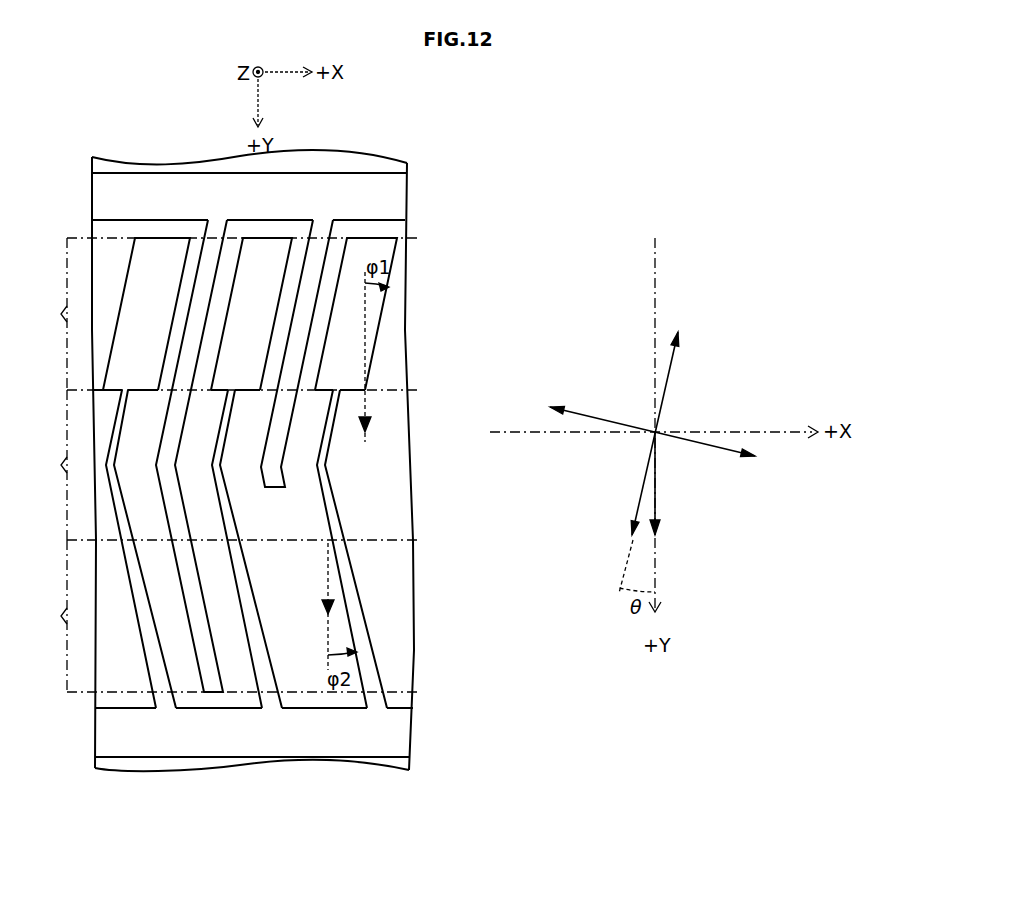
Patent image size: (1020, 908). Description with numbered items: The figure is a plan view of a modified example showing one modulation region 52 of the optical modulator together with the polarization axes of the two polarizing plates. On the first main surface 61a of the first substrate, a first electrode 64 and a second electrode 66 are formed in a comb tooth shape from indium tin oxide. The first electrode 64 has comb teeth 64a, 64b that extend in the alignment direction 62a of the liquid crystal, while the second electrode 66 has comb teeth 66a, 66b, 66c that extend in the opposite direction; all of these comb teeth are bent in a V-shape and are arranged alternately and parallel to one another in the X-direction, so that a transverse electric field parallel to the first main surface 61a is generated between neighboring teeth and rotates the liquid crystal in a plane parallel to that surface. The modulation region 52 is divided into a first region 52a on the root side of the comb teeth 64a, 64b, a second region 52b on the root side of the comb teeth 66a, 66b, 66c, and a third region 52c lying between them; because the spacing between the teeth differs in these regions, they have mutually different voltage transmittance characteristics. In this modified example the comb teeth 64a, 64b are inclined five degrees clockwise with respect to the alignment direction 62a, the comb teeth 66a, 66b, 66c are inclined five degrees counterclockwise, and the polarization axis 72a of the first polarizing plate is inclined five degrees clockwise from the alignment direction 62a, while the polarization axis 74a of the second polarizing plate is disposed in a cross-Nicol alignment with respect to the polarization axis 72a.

The modulation region 52 is at (397, 138).
The first region 52a is at (221, 314).
The second region 52b is at (221, 616).
The third region 52c is at (221, 465).
The first main surface 61a is at (400, 470).
The alignment direction 62a is at (368, 404).
The first electrode 64 is at (167, 172).
The comb tooth 64a is at (178, 450).
The comb tooth 64b is at (272, 490).
The second electrode 66 is at (238, 758).
The comb tooth 66a is at (136, 620).
The comb tooth 66b is at (263, 603).
The comb tooth 66c is at (352, 563).
The polarization axis 72a is at (668, 372).
The polarization axis 74a is at (604, 418).